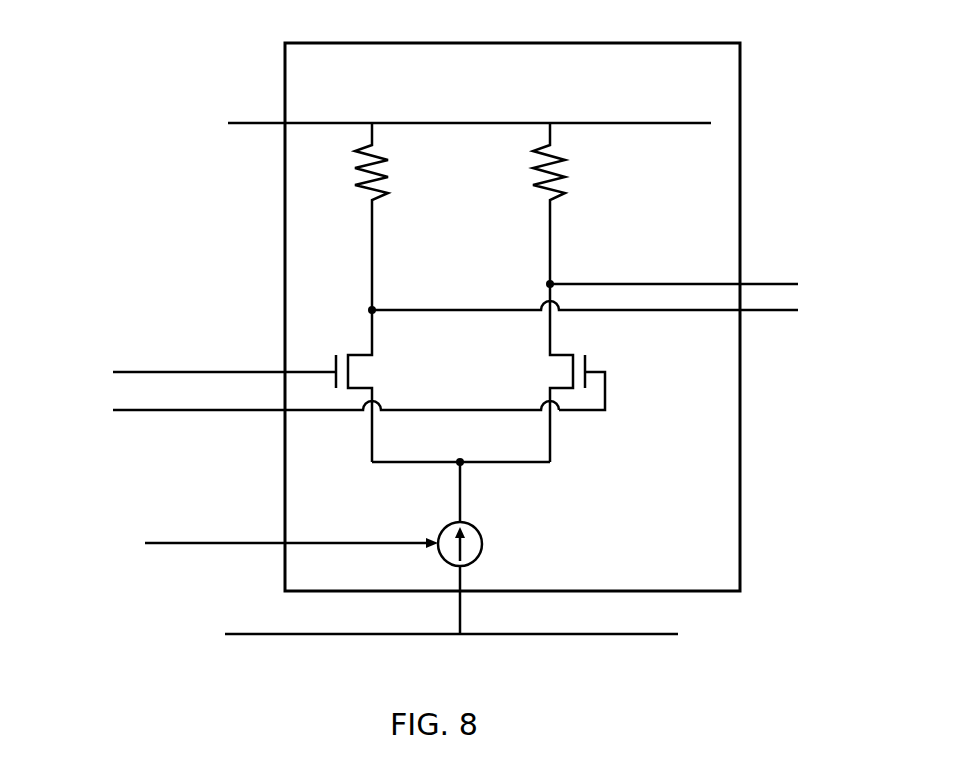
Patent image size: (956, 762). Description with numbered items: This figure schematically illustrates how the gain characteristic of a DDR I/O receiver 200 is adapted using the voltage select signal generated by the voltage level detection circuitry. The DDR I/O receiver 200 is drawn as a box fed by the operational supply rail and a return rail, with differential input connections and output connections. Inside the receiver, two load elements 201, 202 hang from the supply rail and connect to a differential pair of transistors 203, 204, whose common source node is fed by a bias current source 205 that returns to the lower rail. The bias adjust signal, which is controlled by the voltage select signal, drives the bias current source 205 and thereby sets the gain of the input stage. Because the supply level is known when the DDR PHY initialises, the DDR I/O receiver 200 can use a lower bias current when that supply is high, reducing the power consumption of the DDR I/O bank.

The DDR I/O receiver 200 is at (437, 345).
The left load resistor (not numbered in FIG. 8) 201 is at (371, 216).
The right load resistor (not numbered in FIG. 8) 202 is at (549, 203).
The left input transistor (not numbered in FIG. 8) 203 is at (242, 386).
The right input transistor (not numbered in FIG. 8) 204 is at (577, 373).
The bias current source (not numbered in FIG. 8) 205 is at (460, 548).